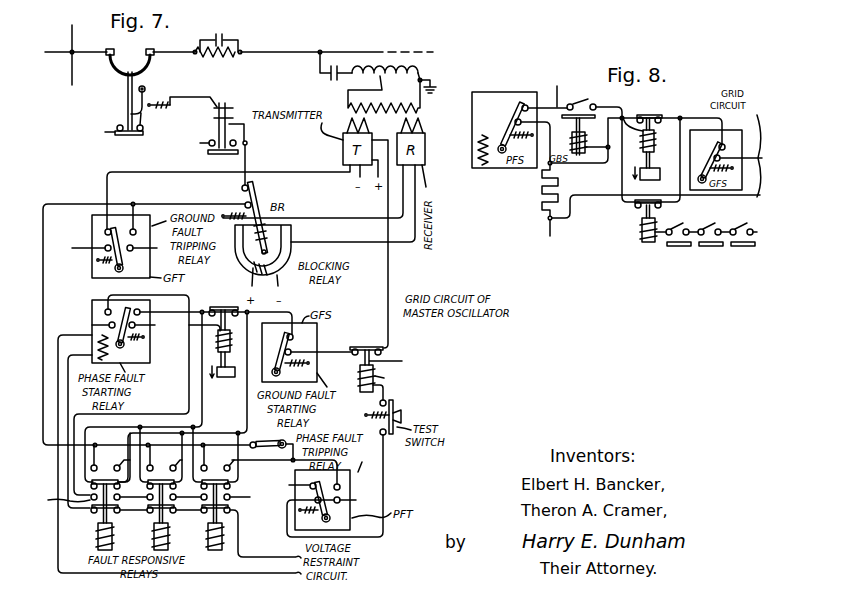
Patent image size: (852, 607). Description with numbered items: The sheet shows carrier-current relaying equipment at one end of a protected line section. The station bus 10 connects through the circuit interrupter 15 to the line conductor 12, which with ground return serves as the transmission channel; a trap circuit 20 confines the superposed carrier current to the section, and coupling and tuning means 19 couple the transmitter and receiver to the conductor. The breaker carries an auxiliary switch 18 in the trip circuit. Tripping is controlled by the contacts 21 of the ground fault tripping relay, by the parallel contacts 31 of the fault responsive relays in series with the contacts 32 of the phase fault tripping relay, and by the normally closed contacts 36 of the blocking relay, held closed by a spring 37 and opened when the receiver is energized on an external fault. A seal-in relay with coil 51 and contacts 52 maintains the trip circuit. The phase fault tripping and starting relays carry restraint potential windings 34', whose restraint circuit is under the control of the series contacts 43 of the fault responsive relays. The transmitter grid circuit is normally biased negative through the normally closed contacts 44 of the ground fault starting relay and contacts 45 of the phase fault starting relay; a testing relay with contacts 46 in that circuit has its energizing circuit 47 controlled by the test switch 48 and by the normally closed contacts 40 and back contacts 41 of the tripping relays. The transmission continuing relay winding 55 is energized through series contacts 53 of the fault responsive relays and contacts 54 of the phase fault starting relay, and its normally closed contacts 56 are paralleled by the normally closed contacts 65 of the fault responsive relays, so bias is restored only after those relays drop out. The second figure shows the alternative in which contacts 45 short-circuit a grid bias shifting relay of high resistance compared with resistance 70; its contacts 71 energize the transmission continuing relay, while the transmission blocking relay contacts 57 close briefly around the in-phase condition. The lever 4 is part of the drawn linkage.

In FIG. 7, the bus 10 is at (74, 78).
In FIG. 7, the line conductor 12 is at (302, 47).
In FIG. 7, the circuit interrupter 15 is at (150, 62).
In FIG. 7, the auxiliary switch 18 is at (123, 119).
In FIG. 7, the coupling and tuning means 19 is at (400, 95).
In FIG. 7, the trap circuit 20 is at (240, 42).
In FIG. 7, the contacts of ground fault tripping relay 21 is at (147, 230).
In FIG. 7, the contacts of fault responsive relays 31 is at (225, 466).
In FIG. 7, the contacts of phase fault tripping relay 32 is at (341, 488).
In FIG. 7, the potential windings 34' is at (179, 454).
In FIG. 8, the potential windings 34' is at (488, 163).
In FIG. 7, the contacts of blocking relay 36 is at (242, 190).
In FIG. 7, the spring 37 is at (242, 218).
In FIG. 7, the contacts of ground fault tripping relay 40 is at (104, 232).
In FIG. 7, the back contacts of phase fault tripping relay 41 is at (304, 497).
In FIG. 7, the contacts of fault responsive relays 43 is at (206, 512).
In FIG. 7, the contacts of ground fault starting relay 44 is at (293, 338).
In FIG. 8, the contacts of ground fault starting relay 44 is at (731, 140).
In FIG. 7, the contacts of phase fault starting relay 45 is at (141, 312).
In FIG. 8, the contacts of phase fault starting relay 45 is at (528, 110).
In FIG. 7, the contacts of testing relay 46 is at (358, 357).
In FIG. 7, the energizing circuit of testing relay 47 is at (360, 378).
In FIG. 7, the test switch 48 is at (392, 405).
In FIG. 7, the coil of seal-in relay 51 is at (216, 108).
In FIG. 7, the contacts of seal-in relay 52 is at (205, 148).
In FIG. 7, the contacts of fault responsive relays 53 is at (60, 500).
In FIG. 8, the contacts of fault responsive relays 53 is at (711, 229).
In FIG. 7, the contacts of phase fault starting relay 54 is at (104, 312).
In FIG. 7, the winding of transmission continuing relay 55 is at (217, 337).
In FIG. 8, the winding of transmission continuing relay 55 is at (654, 136).
In FIG. 7, the contacts of transmission continuing relay 56 is at (233, 306).
In FIG. 8, the contacts of transmission continuing relay 56 is at (658, 115).
In FIG. 8, the contacts of transmission blocking relay 57 is at (633, 207).
In FIG. 7, the normally closed contacts of fault responsive relays 65 is at (229, 488).
In FIG. 8, the resistance 70 is at (542, 199).
In FIG. 8, the contacts of grid bias shifting relay 71 is at (586, 103).
In FIG. 7, the armature 4 is at (271, 462).